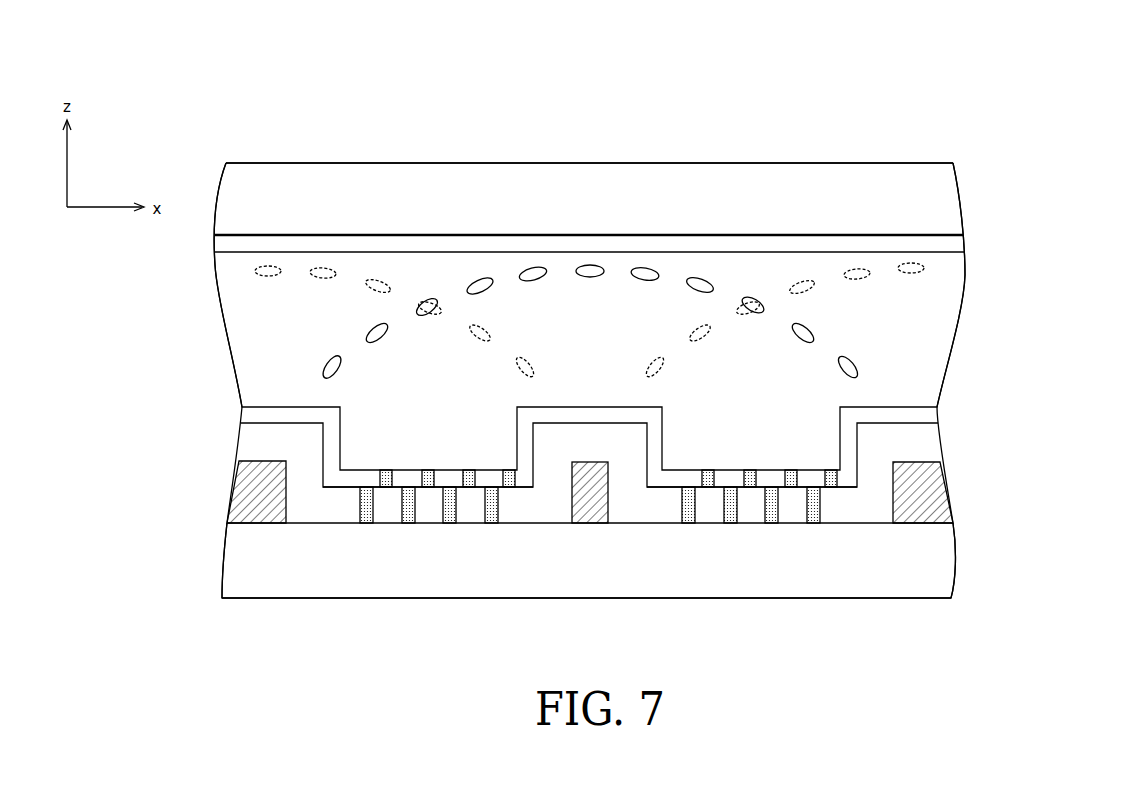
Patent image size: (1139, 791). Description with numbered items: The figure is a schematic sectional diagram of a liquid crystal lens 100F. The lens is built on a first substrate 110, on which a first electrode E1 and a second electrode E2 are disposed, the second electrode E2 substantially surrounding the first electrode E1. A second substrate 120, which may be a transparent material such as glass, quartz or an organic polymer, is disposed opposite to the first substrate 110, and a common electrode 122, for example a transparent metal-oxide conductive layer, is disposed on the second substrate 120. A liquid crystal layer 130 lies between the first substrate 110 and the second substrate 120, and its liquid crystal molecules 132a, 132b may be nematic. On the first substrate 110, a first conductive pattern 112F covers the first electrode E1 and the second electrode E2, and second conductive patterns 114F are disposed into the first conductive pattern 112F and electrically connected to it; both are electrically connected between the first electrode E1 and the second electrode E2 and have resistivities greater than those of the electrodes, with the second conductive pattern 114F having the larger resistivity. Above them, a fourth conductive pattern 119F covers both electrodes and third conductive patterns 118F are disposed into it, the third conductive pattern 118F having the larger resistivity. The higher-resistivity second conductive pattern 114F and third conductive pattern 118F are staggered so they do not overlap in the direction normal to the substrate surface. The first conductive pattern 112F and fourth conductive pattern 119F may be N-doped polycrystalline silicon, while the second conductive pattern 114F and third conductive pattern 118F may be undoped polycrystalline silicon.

The liquid crystal lens 100F is at (1127, 668).
The first substrate 110 is at (930, 572).
The first conductive pattern 112F is at (470, 510).
The second conductive pattern 114F is at (512, 510).
The third conductive pattern 118F is at (520, 458).
The fourth conductive pattern 119F is at (445, 470).
The second substrate 120 is at (948, 196).
The common electrode 122 is at (948, 248).
The liquid crystal layer 130 is at (938, 344).
The liquid crystal molecules 132a is at (924, 270).
The liquid crystal molecules 132b is at (858, 360).
The first electrode E1 is at (587, 527).
The second electrode E2 is at (240, 498).